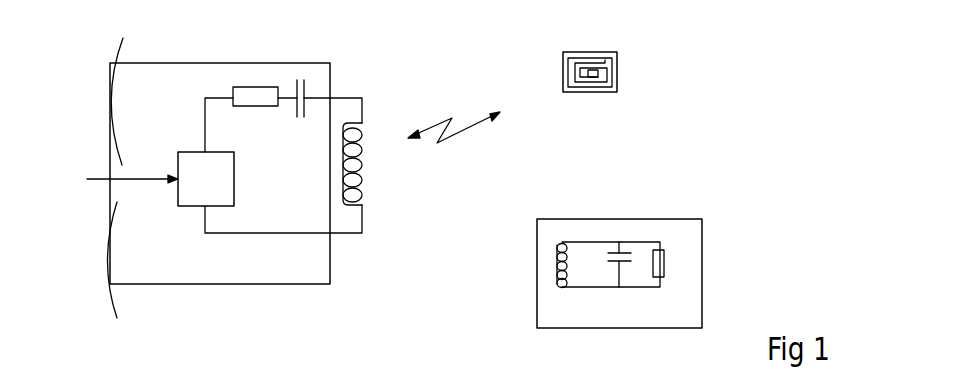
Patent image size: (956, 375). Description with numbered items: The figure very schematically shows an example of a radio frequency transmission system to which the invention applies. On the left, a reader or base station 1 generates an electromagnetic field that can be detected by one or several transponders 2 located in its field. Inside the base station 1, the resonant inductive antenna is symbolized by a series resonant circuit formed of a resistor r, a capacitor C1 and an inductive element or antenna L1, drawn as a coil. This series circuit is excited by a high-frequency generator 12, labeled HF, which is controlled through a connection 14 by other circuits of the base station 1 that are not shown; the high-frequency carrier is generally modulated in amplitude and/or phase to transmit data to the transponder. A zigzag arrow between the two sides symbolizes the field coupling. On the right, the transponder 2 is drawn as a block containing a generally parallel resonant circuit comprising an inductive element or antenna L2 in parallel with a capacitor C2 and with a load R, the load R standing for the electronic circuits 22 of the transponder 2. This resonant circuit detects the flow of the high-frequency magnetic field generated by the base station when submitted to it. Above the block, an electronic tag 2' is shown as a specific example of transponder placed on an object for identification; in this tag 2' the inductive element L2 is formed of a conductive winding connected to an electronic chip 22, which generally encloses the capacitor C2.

The reader or base station 1 is at (212, 198).
The high-frequency generator 12 is at (234, 178).
The connection 14 is at (100, 180).
The transponder 2 is at (651, 293).
The electronic tag 2' is at (580, 155).
The electronic chip 22 is at (595, 80).
The inductive element or antenna L1 is at (365, 164).
The capacitor C1 is at (303, 110).
The resistor r is at (255, 104).
The inductive element or antenna L2 is at (605, 60).
The capacitor C2 is at (618, 265).
The load R is at (660, 268).